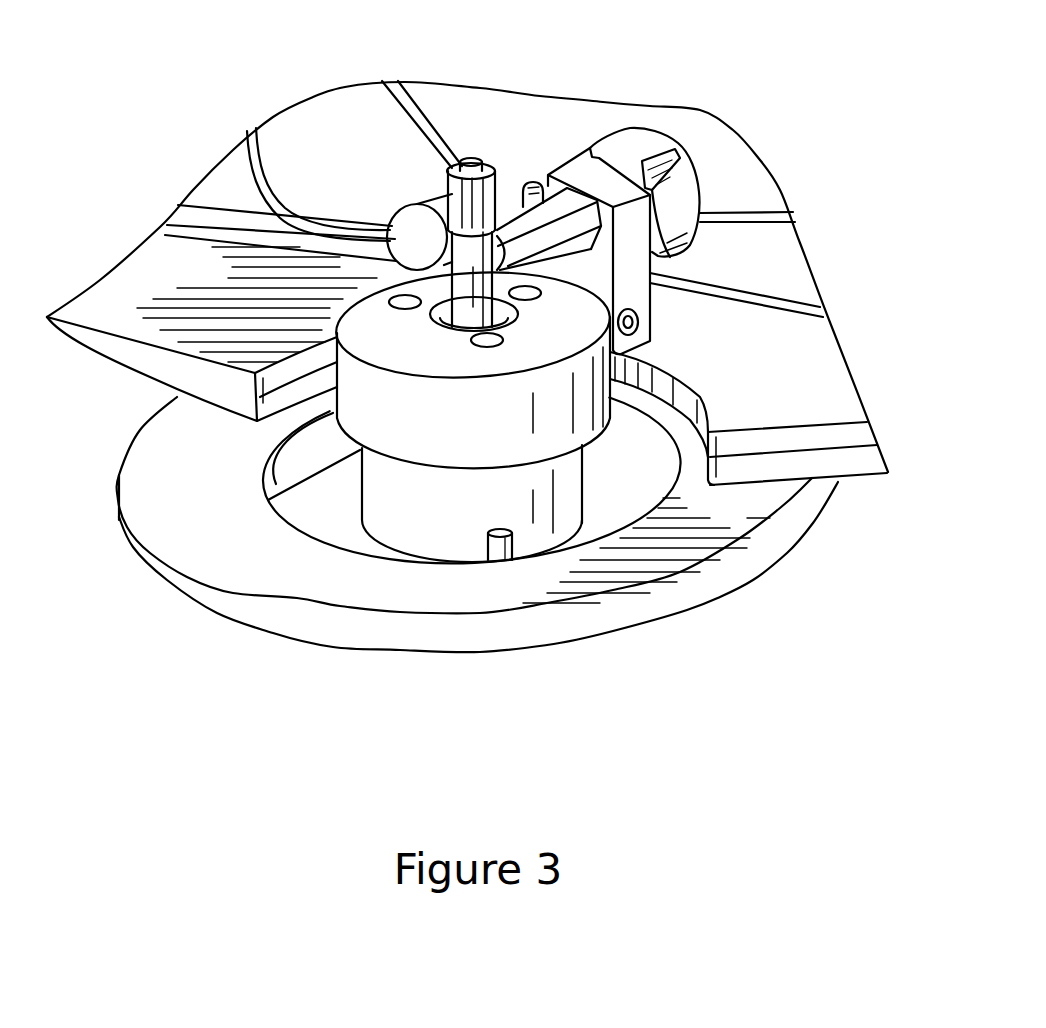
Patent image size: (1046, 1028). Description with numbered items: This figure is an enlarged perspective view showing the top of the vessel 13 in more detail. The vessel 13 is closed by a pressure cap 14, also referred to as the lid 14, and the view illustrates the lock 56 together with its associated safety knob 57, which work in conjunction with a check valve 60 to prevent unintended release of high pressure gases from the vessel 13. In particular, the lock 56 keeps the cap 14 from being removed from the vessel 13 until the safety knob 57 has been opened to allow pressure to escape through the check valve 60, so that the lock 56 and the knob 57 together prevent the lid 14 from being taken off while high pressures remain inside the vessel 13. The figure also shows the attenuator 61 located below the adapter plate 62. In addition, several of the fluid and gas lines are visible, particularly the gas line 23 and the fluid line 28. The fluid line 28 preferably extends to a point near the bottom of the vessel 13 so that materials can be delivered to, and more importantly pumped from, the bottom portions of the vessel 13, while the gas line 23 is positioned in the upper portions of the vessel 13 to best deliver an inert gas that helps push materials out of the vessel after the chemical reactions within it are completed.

The vessel 13 is at (472, 503).
The pressure cap 14 is at (473, 366).
The gas line 23 is at (257, 168).
The fluid line 28 is at (437, 125).
The lock 56 is at (637, 293).
The safety knob 57 is at (658, 143).
The check valve 60 is at (548, 246).
The attenuator 61 is at (321, 511).
The adapter plate 62 is at (533, 627).